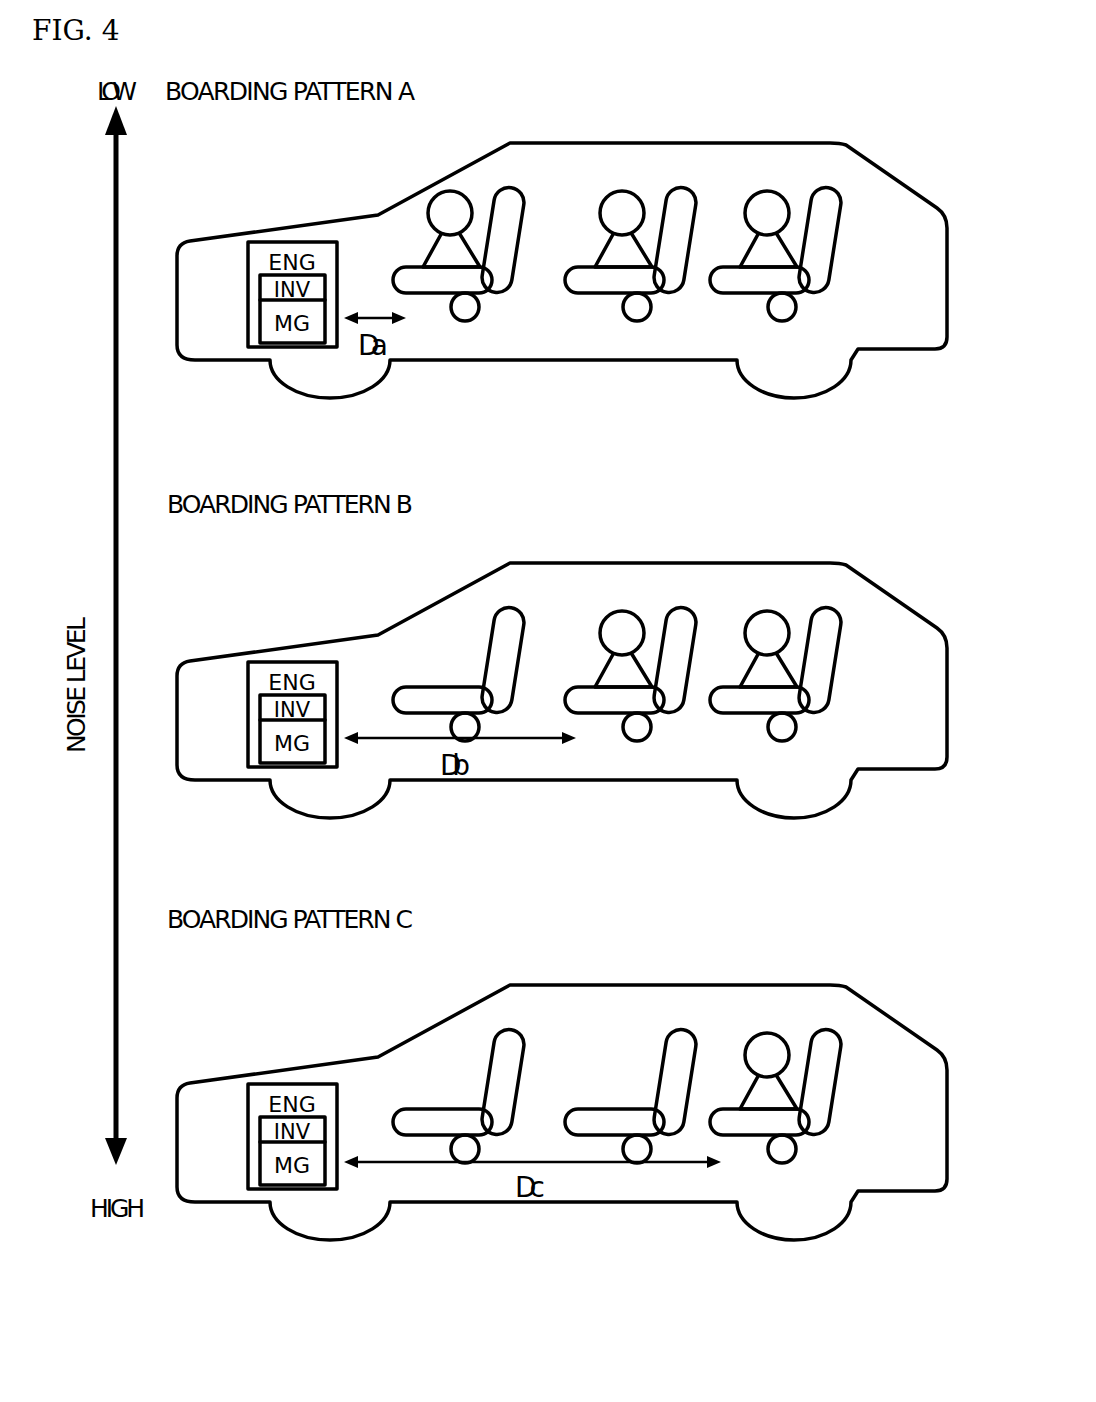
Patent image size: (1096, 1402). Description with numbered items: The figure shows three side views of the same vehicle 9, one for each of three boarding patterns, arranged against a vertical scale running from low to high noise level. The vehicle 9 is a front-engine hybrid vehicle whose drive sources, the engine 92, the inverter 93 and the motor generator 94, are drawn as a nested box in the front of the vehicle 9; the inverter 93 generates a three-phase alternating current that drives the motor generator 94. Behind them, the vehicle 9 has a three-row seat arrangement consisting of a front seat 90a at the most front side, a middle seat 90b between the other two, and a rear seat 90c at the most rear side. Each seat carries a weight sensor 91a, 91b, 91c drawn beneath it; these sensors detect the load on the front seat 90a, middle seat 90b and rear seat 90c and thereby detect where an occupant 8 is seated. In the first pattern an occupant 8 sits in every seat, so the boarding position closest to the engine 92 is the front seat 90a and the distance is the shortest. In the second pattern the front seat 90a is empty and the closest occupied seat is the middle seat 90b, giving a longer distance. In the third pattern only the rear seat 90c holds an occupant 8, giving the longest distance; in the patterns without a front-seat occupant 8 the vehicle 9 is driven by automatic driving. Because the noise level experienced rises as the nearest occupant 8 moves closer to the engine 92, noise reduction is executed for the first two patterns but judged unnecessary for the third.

The occupant 8 is at (632, 609).
The vehicle 9 is at (562, 628).
The front seat 90a is at (499, 620).
The middle seat 90b is at (672, 620).
The rear seat 90c is at (816, 620).
The weight sensor 91a is at (515, 768).
The weight sensor 91b is at (687, 773).
The weight sensor 91c is at (833, 773).
The engine 92 is at (309, 662).
The inverter 93 is at (332, 675).
The motor generator 94 is at (232, 689).